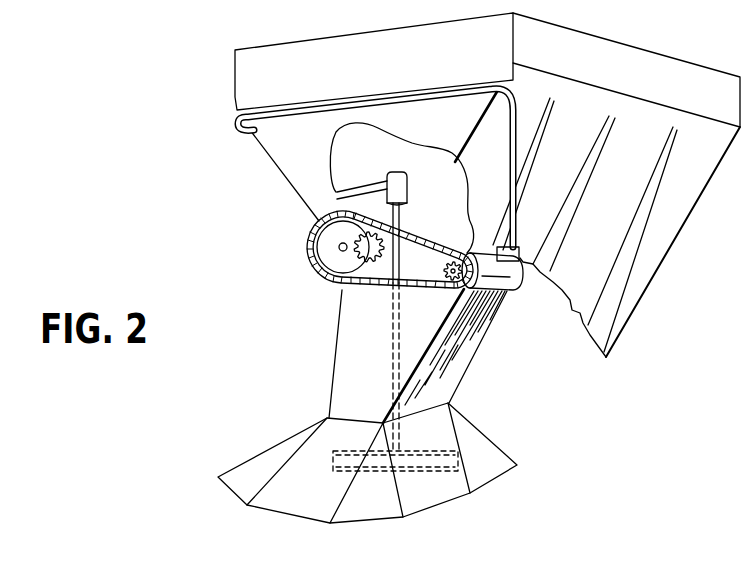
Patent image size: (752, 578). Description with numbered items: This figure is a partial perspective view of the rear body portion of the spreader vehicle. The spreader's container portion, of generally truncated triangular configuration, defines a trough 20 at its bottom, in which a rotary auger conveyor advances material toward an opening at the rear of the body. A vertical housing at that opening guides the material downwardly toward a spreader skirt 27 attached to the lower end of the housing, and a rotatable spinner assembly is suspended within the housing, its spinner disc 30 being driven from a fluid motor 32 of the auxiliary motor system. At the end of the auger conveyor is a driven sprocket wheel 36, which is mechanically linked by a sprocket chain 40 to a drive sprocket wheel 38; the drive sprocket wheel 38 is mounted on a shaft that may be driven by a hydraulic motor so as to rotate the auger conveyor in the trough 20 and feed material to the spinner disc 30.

The trough 20 is at (278, 168).
The spreader skirt 27 is at (491, 441).
The spinner disc 30 is at (378, 472).
The fluid motor 32 is at (407, 190).
The driven sprocket wheel 36 is at (330, 249).
The drive sprocket wheel 38 is at (452, 286).
The sprocket chain 40 is at (390, 287).